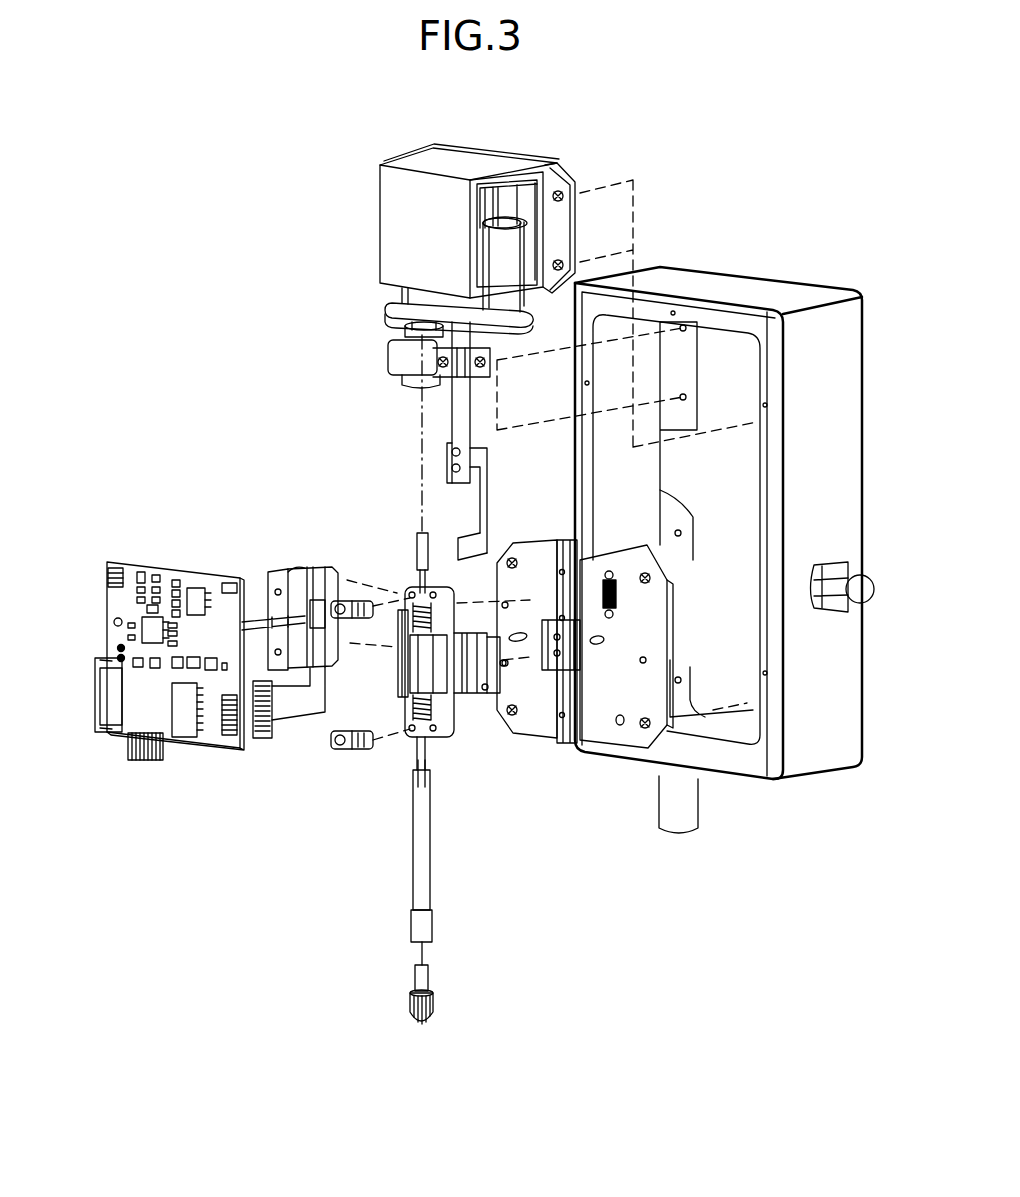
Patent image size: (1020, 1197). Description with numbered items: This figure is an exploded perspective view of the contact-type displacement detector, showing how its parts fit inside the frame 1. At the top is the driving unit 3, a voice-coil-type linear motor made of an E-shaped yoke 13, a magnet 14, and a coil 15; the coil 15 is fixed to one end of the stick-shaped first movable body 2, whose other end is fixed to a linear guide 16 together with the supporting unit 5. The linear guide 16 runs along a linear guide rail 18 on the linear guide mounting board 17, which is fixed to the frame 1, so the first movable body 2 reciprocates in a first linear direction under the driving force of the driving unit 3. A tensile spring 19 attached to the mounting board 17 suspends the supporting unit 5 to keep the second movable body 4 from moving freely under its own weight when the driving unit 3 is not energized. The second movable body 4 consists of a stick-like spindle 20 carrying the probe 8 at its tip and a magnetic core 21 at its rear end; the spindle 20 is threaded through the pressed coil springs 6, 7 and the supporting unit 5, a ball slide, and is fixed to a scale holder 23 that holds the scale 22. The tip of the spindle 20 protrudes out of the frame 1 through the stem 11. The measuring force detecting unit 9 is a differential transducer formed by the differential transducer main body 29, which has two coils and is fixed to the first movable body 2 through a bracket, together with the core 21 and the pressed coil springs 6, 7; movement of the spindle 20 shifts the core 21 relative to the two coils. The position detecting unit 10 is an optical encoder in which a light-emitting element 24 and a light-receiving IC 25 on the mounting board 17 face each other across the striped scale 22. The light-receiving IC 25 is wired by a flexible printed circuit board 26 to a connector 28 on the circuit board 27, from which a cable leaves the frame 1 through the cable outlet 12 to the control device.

The frame 1 is at (858, 375).
The first movable body 2 is at (460, 398).
The driving unit 3 is at (534, 208).
The second movable body 4 is at (404, 880).
The supporting unit 5 is at (410, 672).
The pressed coil spring 6 is at (410, 705).
The pressed coil spring 7 is at (405, 616).
The probe 8 is at (432, 1000).
The measuring force detecting unit 9 is at (376, 356).
The position detecting unit 10 is at (417, 614).
The stem 11 is at (678, 830).
The cable outlet 12 is at (866, 590).
The E-shaped yoke 13 is at (527, 172).
The magnet 14 is at (530, 205).
The coil 15 is at (517, 240).
The linear guide 16 is at (567, 648).
The linear guide mounting board 17 is at (630, 740).
The linear guide rail 18 is at (565, 745).
The tensile spring 19 is at (616, 601).
The spindle 20 is at (415, 872).
The core 21 is at (422, 547).
The scale 22 is at (398, 645).
The scale holder 23 is at (410, 593).
The light-emitting element 24 is at (280, 575).
The light-receiving IC 25 is at (305, 575).
The flexible printed circuit board 26 is at (285, 712).
The circuit board 27 is at (143, 661).
The connector 28 is at (100, 690).
The differential transducer main body 29 is at (410, 327).